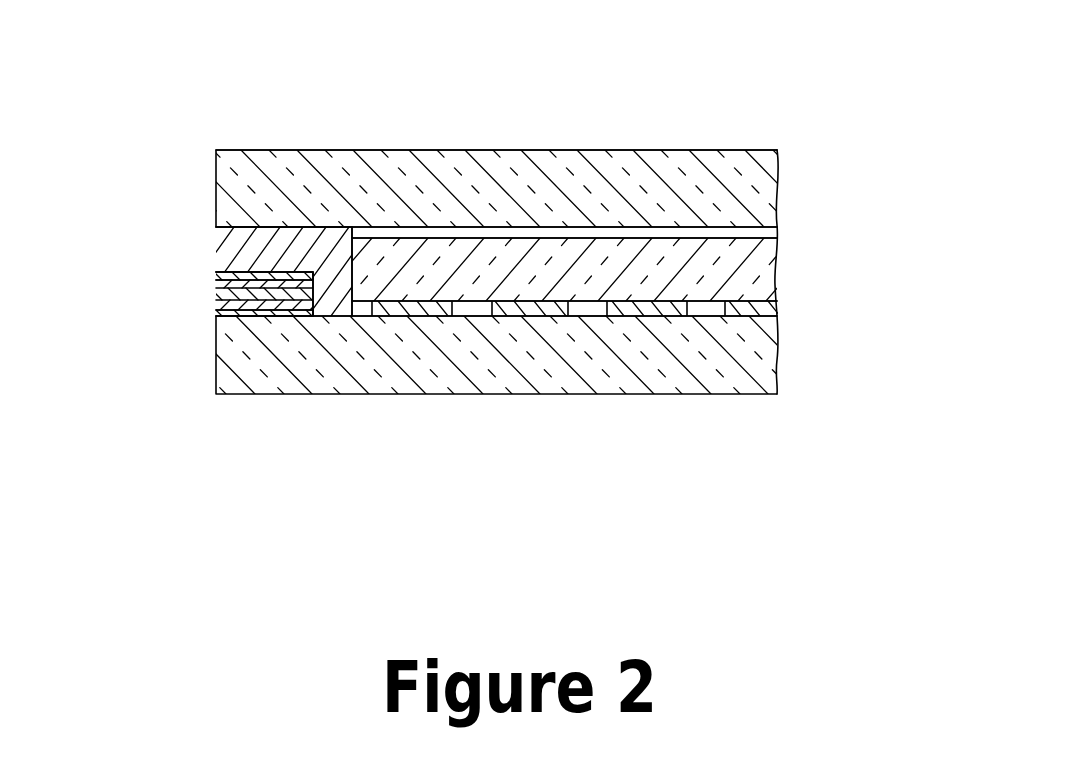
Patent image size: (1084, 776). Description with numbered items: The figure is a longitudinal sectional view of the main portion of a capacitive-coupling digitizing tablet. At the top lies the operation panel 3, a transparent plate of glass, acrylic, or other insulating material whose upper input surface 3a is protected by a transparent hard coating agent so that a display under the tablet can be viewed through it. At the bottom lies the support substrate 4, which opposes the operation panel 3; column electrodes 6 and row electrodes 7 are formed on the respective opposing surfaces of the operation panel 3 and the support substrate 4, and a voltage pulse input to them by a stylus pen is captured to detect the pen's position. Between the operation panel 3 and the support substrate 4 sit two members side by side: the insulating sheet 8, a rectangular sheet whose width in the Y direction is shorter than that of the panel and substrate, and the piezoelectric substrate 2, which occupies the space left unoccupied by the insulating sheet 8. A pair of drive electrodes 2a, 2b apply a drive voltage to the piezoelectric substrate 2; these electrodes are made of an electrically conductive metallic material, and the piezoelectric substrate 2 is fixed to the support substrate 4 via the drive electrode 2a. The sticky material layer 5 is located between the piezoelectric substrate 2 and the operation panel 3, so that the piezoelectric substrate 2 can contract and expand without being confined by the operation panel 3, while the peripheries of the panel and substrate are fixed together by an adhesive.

The piezoelectric substrate 2 is at (216, 292).
The drive electrode 2a is at (216, 304).
The drive electrode 2b is at (216, 273).
The operation panel 3 is at (685, 182).
The input surface 3a is at (545, 150).
The support substrate 4 is at (760, 366).
The sticky material layer 5 is at (218, 240).
The column electrodes 6 is at (791, 239).
The row electrodes 7 is at (778, 305).
The insulating sheet 8 is at (474, 246).